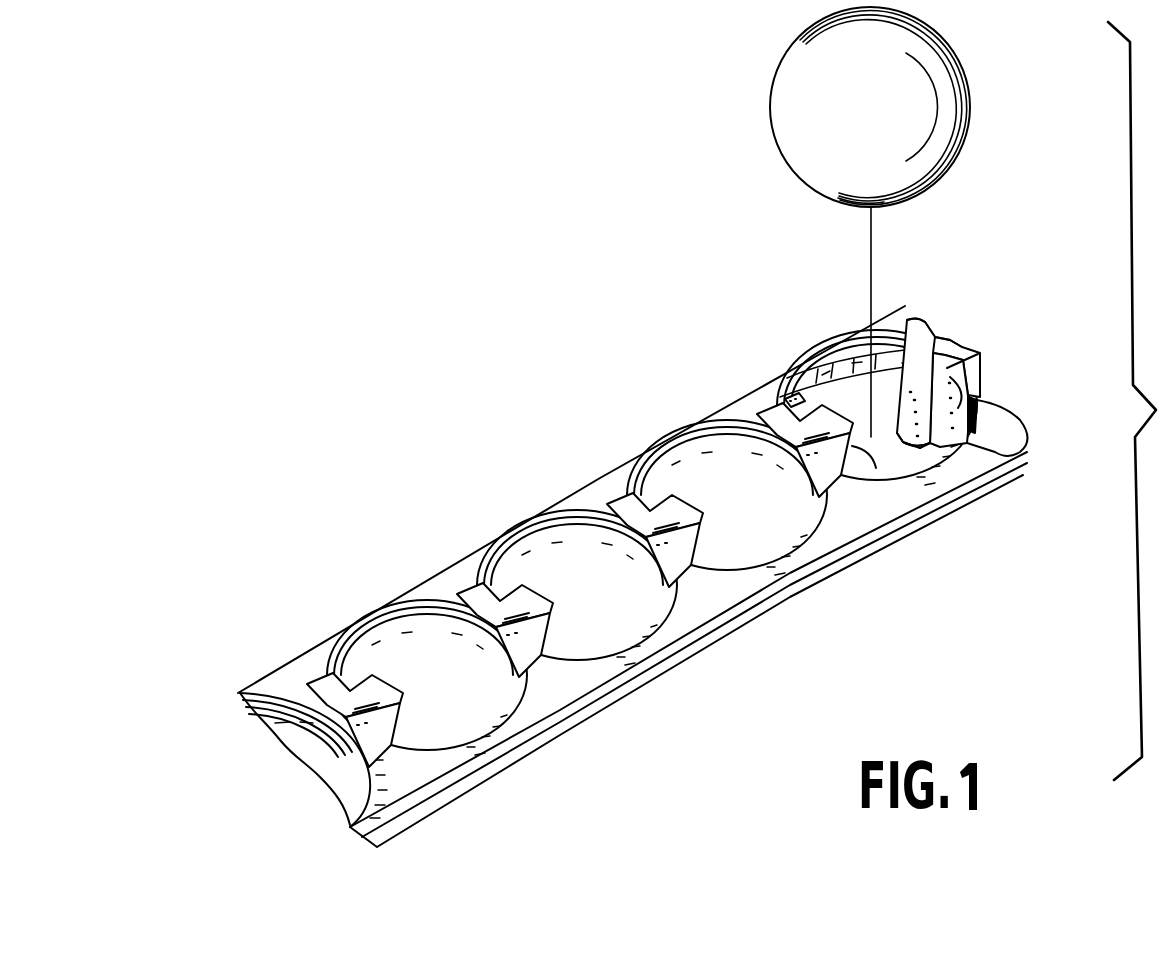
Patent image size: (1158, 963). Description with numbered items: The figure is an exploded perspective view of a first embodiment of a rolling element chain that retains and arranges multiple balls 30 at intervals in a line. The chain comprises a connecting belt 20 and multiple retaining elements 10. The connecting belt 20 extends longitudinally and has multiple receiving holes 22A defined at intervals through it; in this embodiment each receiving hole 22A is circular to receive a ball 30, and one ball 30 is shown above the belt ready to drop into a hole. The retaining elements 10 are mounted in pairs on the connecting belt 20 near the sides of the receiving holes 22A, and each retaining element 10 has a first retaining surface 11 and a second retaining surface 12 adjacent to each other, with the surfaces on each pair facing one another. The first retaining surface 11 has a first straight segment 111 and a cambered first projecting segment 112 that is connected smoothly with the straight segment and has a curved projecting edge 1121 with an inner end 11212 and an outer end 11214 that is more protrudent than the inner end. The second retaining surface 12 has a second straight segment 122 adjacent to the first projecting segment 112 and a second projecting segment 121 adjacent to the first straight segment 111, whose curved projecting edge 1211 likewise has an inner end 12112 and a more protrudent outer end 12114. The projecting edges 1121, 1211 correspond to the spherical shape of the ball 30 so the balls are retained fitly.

The retaining element 10 is at (704, 514).
The first retaining surface 11 is at (921, 427).
The second retaining surface 12 is at (953, 401).
The connecting belt 20 is at (632, 576).
The receiving hole 22A is at (853, 448).
The ball 30 is at (795, 98).
The first straight segment 111 is at (907, 322).
The first projecting segment 112 is at (974, 513).
The second projecting segment 121 is at (978, 400).
The second straight segment 122 is at (965, 450).
The projecting edge 1121 is at (921, 452).
The projecting edge 1211 is at (922, 334).
The inner end 11212 is at (945, 453).
The outer end 11214 is at (800, 402).
The inner end 12112 is at (948, 345).
The outer end 12114 is at (952, 368).